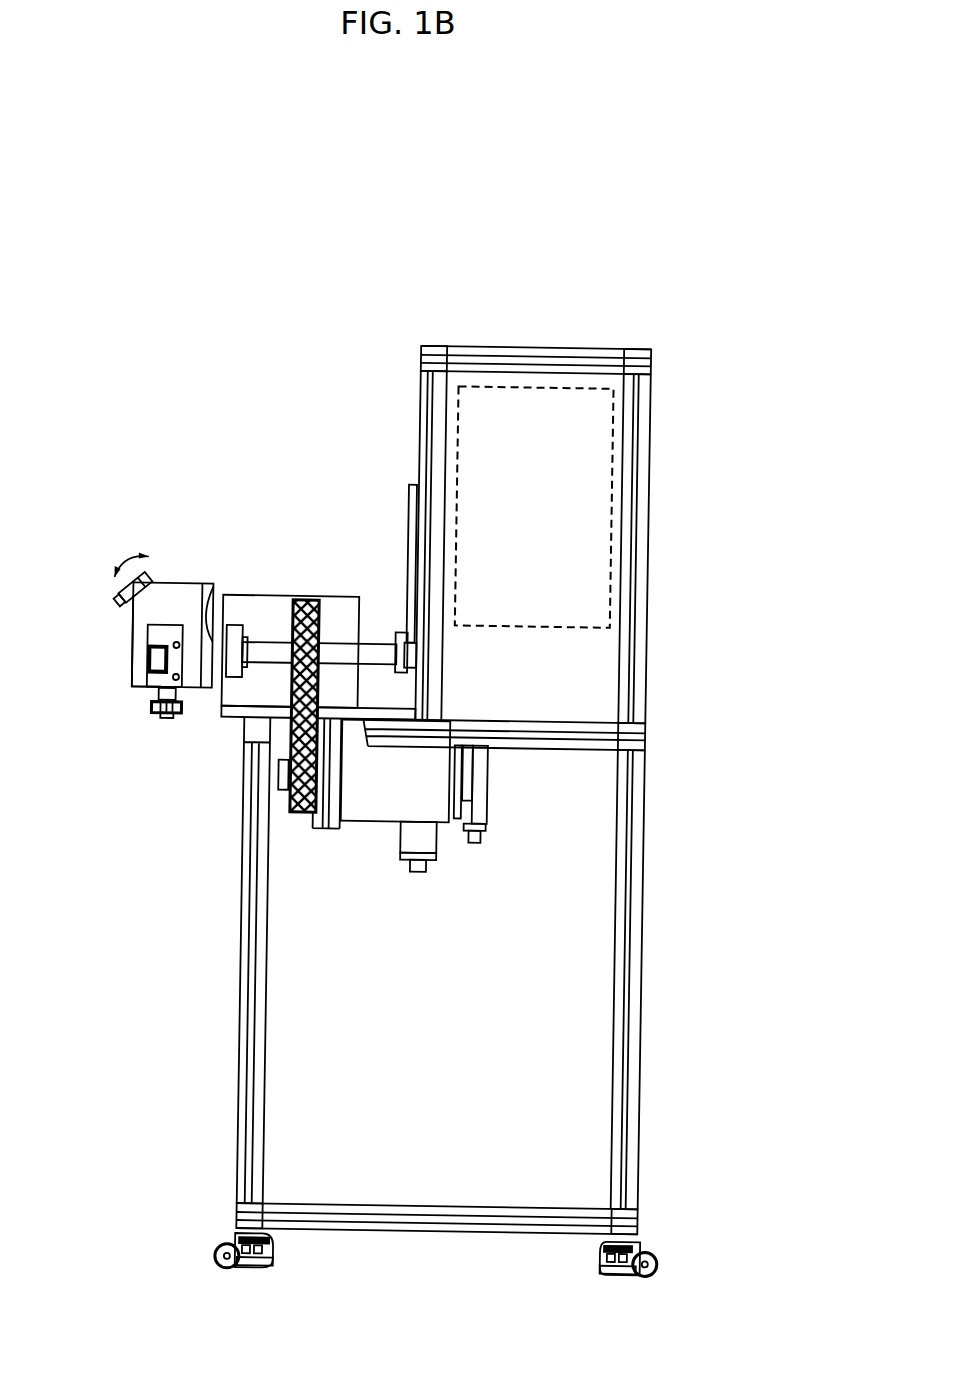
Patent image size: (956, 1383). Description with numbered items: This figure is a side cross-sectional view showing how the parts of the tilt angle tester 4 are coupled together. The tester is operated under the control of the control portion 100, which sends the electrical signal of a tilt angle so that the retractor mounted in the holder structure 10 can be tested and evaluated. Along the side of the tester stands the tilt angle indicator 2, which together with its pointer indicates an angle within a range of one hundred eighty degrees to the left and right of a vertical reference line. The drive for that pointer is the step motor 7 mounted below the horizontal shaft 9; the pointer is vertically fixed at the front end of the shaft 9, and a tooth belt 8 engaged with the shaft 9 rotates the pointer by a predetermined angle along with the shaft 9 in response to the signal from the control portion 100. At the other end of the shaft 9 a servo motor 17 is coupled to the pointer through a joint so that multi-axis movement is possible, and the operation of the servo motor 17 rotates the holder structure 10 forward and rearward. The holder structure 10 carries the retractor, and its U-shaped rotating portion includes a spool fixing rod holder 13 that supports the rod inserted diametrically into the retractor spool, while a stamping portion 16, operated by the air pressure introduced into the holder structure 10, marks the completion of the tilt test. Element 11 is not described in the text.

The tilt angle tester 4 is at (378, 403).
The control portion 100 is at (613, 495).
The tilt angle indicator 2 is at (410, 510).
The step motor 7 is at (367, 823).
The shaft 9 is at (353, 643).
The servo motor 17 is at (217, 640).
The tooth belt 8 is at (291, 746).
The holder structure 10 is at (176, 578).
The nozzle housing 11 is at (133, 652).
The stamping portion 16 is at (148, 668).
The spool fixing rod holder 13 is at (155, 707).